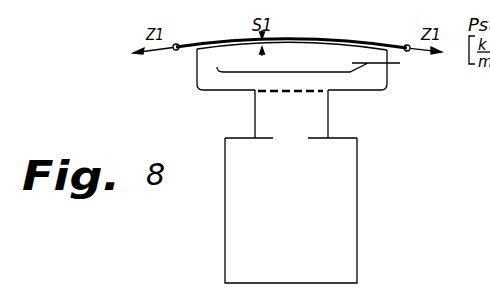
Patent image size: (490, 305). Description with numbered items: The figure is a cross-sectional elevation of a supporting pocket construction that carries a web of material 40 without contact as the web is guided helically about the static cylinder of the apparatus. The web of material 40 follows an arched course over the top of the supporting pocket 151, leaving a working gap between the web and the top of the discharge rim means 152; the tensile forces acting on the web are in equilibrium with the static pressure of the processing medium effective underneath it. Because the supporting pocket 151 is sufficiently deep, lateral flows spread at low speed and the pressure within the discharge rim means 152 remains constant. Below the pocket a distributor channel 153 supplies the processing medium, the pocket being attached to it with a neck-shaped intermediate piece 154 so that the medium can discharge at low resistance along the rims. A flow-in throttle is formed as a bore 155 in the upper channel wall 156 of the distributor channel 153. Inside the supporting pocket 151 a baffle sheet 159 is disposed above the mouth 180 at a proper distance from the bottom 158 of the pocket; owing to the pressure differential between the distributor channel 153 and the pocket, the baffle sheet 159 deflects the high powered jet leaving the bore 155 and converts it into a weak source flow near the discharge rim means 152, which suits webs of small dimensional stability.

The web of material 40 is at (190, 44).
The supporting pocket 151 is at (308, 50).
The discharge rim means 152 is at (388, 78).
The distributor channel 153 is at (358, 212).
The neck-shaped intermediate piece 154 is at (328, 118).
The bore (flow-in throttle) 155 is at (288, 142).
The upper channel wall 156 is at (319, 141).
The bottom of the supporting pocket 158 is at (356, 92).
The baffle sheet 159 is at (328, 72).
The mouth 180 is at (269, 88).